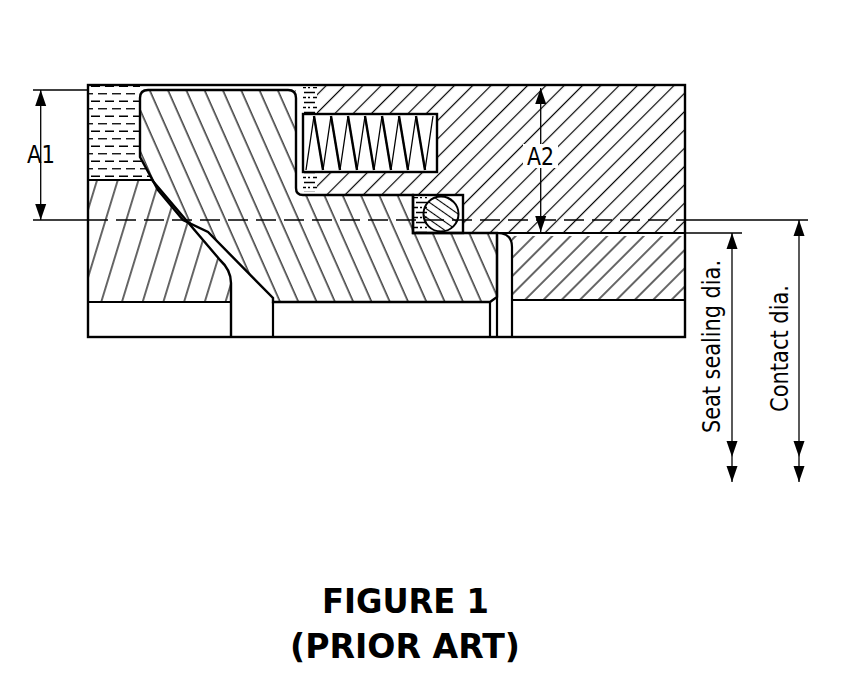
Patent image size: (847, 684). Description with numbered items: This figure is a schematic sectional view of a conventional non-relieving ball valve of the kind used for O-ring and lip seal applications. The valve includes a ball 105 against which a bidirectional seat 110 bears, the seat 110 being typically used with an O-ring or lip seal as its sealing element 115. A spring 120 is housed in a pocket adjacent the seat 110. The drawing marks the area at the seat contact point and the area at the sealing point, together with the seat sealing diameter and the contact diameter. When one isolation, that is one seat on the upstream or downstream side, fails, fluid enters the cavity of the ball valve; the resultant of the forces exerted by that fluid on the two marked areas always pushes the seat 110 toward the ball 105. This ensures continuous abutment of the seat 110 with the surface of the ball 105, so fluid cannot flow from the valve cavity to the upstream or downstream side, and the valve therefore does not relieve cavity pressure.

The ball 105 is at (150, 290).
The seat 110 is at (335, 292).
The sealing element 115 is at (458, 198).
The spring 120 is at (350, 125).